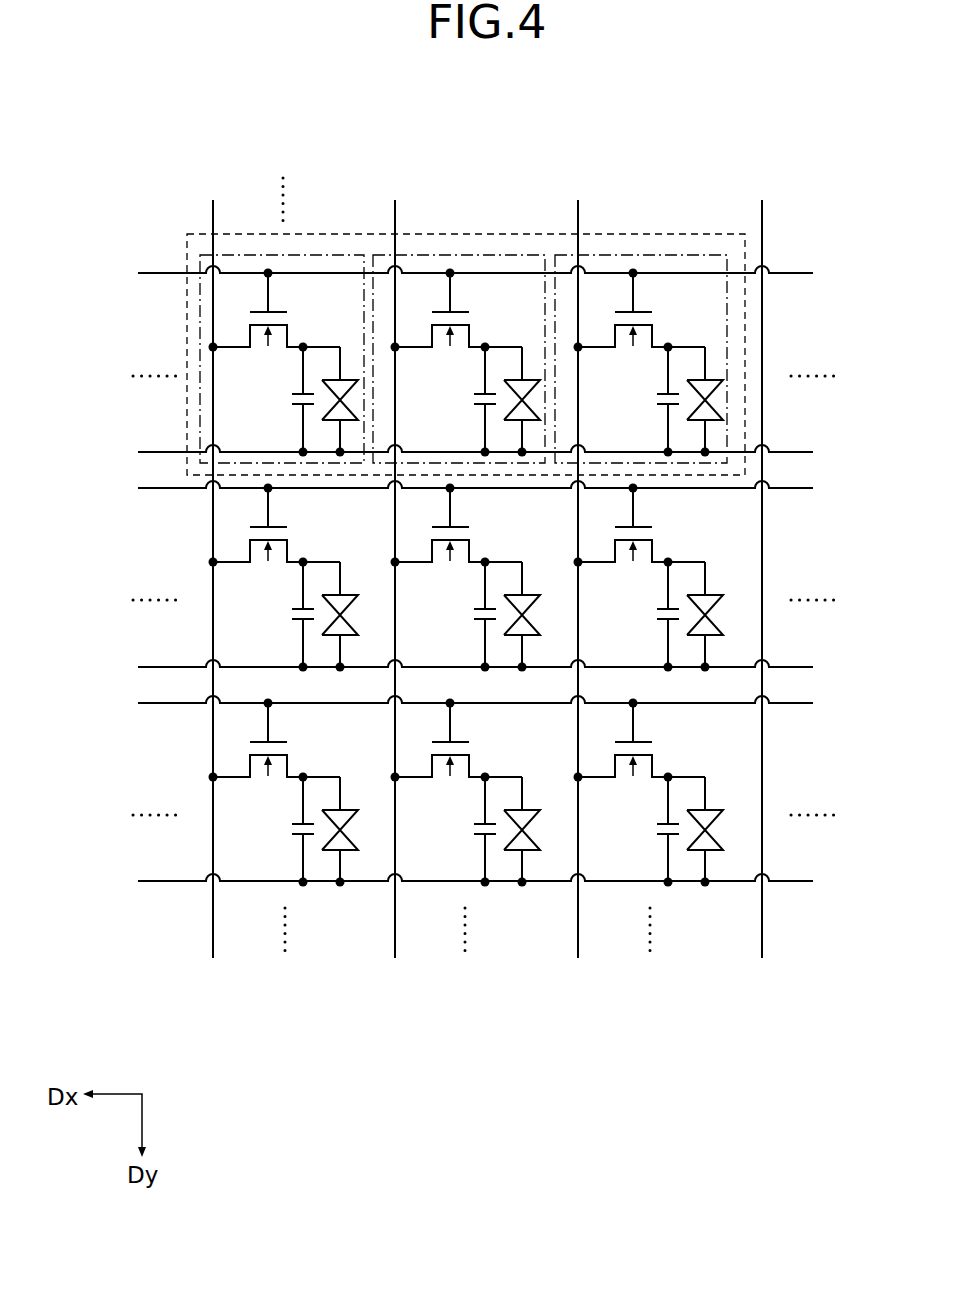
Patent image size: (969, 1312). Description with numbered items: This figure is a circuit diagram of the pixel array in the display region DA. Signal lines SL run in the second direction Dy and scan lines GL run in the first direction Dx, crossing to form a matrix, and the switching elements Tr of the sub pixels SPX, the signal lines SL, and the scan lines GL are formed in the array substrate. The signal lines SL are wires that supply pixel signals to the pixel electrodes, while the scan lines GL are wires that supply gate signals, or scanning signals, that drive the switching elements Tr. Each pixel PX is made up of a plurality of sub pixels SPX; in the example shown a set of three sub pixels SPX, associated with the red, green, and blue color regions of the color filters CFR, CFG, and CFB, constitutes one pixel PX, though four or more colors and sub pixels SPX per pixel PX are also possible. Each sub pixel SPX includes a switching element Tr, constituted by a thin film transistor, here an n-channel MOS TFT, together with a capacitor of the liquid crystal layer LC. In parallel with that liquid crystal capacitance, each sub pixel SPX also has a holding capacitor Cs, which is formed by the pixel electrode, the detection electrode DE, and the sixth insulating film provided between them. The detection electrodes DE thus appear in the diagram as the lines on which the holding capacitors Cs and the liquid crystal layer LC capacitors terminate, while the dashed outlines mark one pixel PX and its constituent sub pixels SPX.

The display region DA is at (733, 167).
The signal line SL is at (213, 222).
The scan line GL is at (178, 273).
The detection electrode DE is at (157, 455).
The pixel PX is at (745, 248).
The sub pixel SPX is at (333, 255).
The red color filter CFR is at (236, 428).
The green color filter CFG is at (510, 292).
The blue color filter CFB is at (682, 290).
The holding capacitor Cs is at (481, 404).
The switching element Tr is at (622, 362).
The liquid crystal layer LC is at (713, 405).